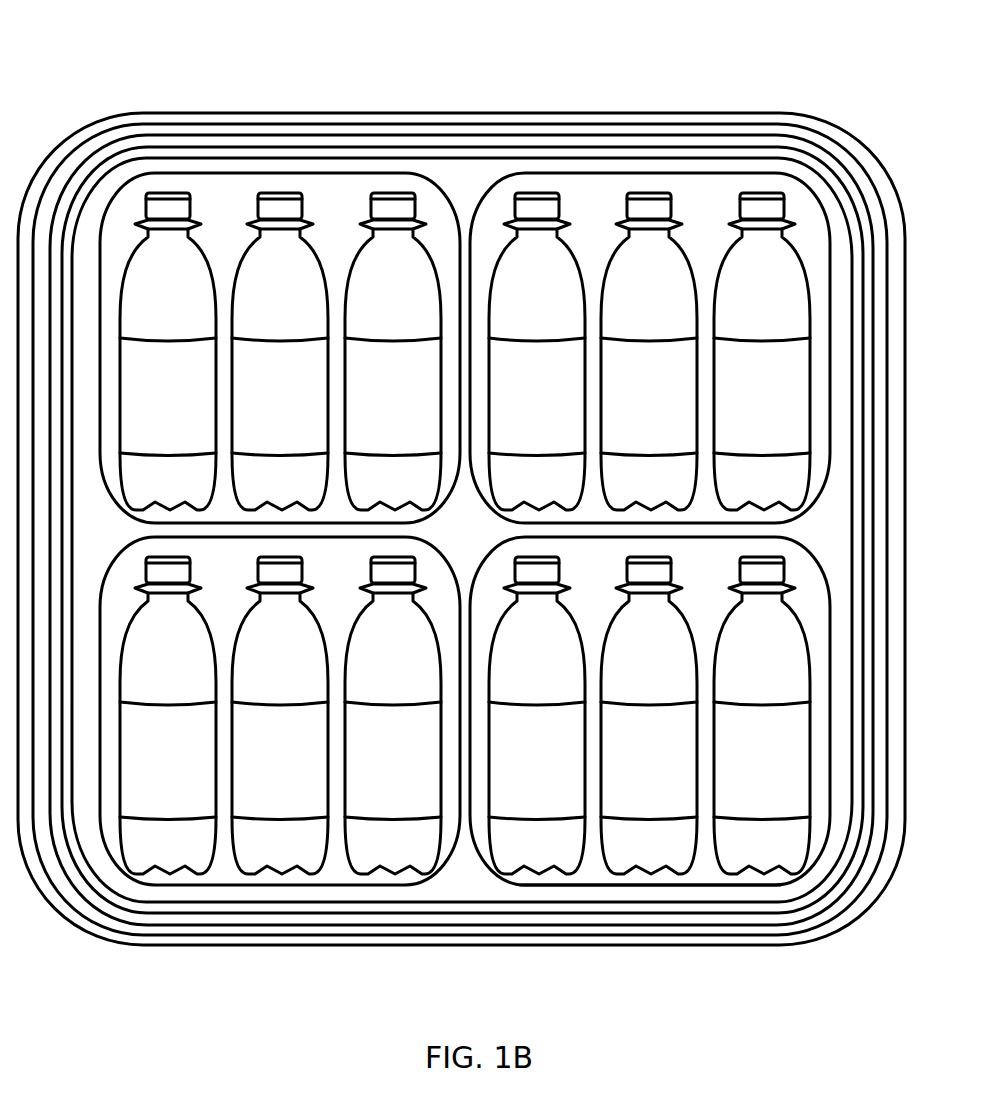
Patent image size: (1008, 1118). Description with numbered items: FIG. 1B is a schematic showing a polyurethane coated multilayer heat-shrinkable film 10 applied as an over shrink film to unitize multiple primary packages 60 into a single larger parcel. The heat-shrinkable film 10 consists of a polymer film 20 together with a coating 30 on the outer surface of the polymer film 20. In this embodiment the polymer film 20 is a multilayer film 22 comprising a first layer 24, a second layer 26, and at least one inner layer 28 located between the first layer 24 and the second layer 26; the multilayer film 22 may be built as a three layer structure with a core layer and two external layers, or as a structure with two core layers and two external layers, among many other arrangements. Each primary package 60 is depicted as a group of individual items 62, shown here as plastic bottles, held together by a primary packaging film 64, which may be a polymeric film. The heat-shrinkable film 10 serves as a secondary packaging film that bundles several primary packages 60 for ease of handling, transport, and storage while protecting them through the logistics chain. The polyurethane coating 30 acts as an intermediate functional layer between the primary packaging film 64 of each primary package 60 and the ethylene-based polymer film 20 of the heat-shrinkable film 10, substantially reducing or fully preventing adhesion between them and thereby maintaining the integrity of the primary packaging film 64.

The heat-shrinkable film 10 is at (170, 92).
The polymer film 20 is at (191, 963).
The multilayer film 22 is at (191, 963).
The first layer 24 is at (441, 143).
The second layer 26 is at (657, 115).
The inner layer 28 is at (556, 128).
The coating 30 is at (110, 875).
The primary package 60 is at (465, 878).
The individual items 62 is at (657, 840).
The primary packaging film 64 is at (742, 882).